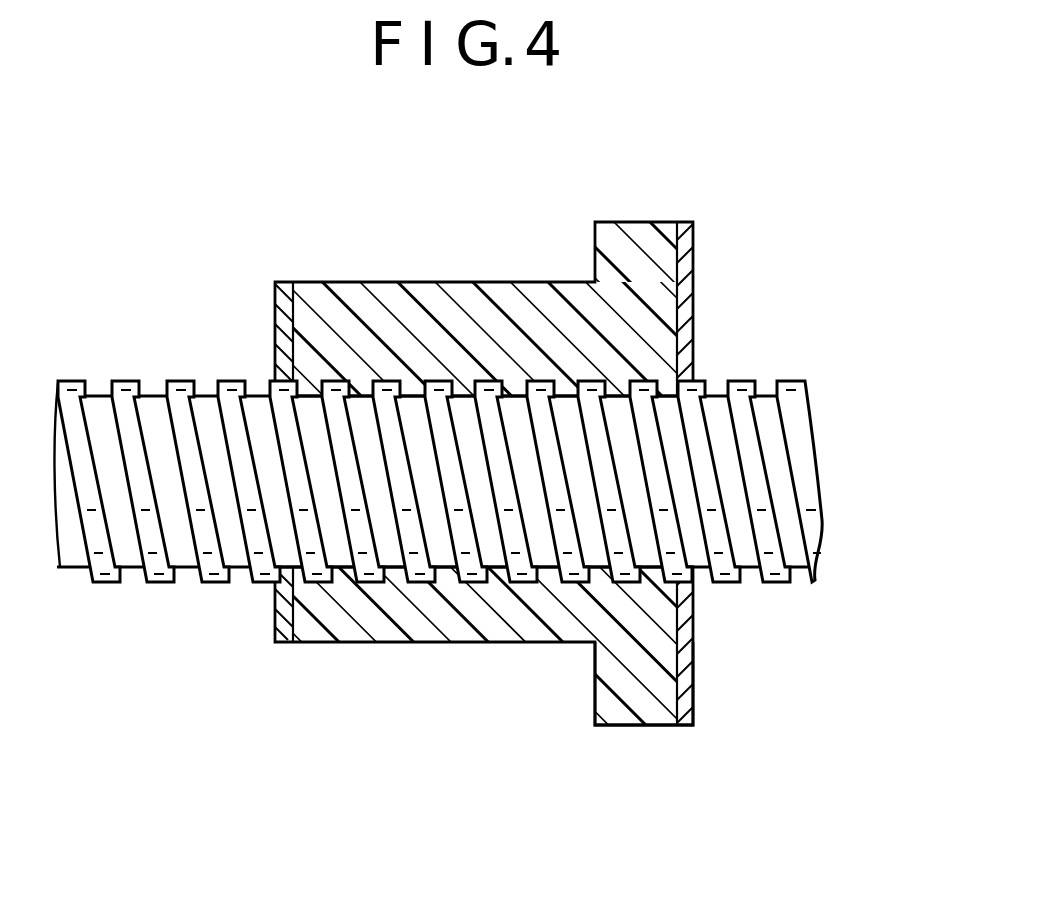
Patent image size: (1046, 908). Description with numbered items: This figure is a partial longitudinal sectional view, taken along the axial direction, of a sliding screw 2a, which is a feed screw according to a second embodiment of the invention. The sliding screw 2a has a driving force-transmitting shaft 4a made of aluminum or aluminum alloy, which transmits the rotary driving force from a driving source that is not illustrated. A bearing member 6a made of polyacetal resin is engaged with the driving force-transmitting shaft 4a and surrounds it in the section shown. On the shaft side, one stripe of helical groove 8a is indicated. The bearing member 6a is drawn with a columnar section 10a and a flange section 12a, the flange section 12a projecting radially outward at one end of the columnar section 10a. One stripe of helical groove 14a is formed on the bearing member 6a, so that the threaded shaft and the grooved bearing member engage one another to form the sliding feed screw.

The sliding screw 2a is at (752, 203).
The driving force-transmitting shaft 4a is at (205, 543).
The bearing member 6a is at (505, 233).
The helical groove 8a is at (128, 557).
The columnar section 10a is at (338, 312).
The flange section 12a is at (625, 710).
The helical groove 14a is at (467, 582).